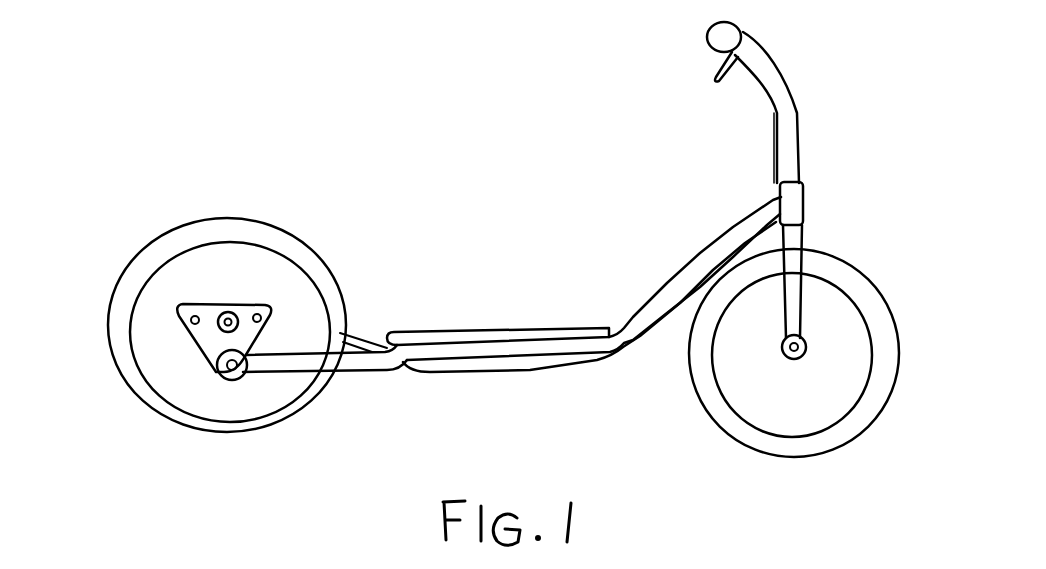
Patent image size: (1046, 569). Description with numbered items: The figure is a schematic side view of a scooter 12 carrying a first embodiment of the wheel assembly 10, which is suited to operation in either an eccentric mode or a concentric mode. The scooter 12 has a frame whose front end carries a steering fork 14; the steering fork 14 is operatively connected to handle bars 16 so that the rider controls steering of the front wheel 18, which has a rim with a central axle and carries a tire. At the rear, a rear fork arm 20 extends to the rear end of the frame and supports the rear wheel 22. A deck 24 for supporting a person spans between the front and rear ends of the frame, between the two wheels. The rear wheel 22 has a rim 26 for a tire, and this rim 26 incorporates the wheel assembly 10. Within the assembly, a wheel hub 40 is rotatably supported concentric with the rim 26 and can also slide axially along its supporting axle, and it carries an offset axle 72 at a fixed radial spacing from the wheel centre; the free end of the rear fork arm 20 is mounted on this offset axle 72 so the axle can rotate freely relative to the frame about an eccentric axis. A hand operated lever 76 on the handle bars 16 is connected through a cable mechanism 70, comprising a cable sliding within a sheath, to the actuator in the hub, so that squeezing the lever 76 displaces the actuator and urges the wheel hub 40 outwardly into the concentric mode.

The wheel assembly 10 is at (157, 207).
The scooter 12 is at (614, 292).
The steering fork 14 is at (795, 242).
The handle bars 16 is at (745, 27).
The front wheel 18 is at (856, 345).
The rear fork arm 20 is at (338, 370).
The rear wheel 22 is at (232, 400).
The deck 24 is at (479, 331).
The rim 26 is at (152, 326).
The wheel hub 40 is at (260, 335).
The cable mechanism 70 is at (537, 370).
The offset axle 72 is at (227, 370).
The hand operated lever 76 is at (720, 63).